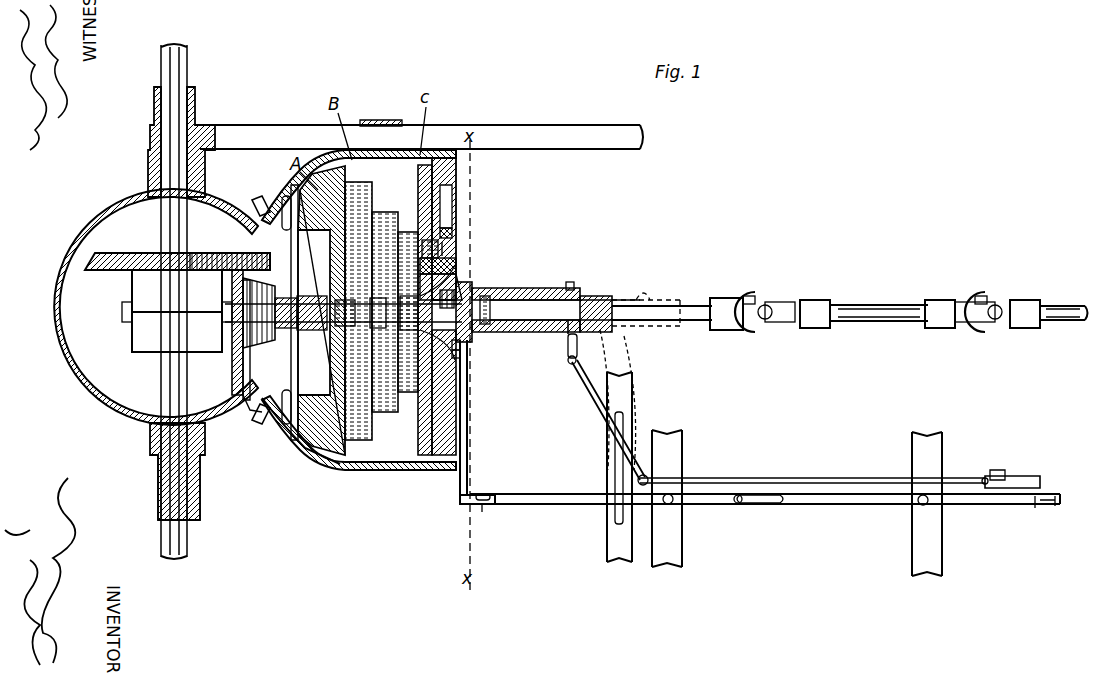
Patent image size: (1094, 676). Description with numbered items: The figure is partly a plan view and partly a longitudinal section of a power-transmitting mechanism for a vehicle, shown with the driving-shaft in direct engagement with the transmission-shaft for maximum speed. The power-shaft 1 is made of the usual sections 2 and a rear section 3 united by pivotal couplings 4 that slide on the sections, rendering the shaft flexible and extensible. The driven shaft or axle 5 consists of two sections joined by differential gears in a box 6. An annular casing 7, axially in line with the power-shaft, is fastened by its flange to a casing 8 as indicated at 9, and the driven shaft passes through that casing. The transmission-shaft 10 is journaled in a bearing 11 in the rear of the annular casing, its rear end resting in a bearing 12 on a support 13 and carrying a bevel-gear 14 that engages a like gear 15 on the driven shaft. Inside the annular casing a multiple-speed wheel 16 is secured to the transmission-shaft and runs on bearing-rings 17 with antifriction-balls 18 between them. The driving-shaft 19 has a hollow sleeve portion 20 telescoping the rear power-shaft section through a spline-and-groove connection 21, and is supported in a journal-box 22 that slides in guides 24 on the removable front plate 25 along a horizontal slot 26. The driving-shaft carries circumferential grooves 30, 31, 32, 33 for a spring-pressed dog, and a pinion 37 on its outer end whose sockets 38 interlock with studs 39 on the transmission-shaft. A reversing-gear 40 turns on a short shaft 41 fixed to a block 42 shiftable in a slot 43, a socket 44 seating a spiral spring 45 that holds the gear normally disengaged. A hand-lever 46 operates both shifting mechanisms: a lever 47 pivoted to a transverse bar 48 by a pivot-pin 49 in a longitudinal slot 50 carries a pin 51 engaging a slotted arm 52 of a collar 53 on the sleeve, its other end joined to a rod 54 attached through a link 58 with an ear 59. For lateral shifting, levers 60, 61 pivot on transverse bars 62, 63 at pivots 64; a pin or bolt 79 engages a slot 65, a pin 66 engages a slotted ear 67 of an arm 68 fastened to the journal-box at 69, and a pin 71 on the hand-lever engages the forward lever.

The power-shaft 1 is at (899, 300).
The power-shaft sections 2 is at (870, 326).
The rear end section of power-shaft 3 is at (690, 308).
The pivotal coupling 4 is at (768, 298).
The driven shaft or axle 5 is at (161, 222).
The differential gear box or casing 6 is at (177, 311).
The annular casing 7 is at (380, 470).
The casing 8 is at (100, 400).
The flange fastening 9 is at (270, 200).
The transmission-shaft 10 is at (258, 350).
The bearing 11 is at (254, 256).
The bearing 12 is at (222, 326).
The support 13 is at (238, 362).
The bevel-gear 14 is at (240, 385).
The bevel-gear 15 is at (220, 253).
The multiple-speed wheel 16 is at (318, 456).
The bearing-rings 17 is at (292, 425).
The antifriction-balls 18 is at (286, 236).
The driving-shaft 19 is at (492, 290).
The sleeve portion 20 is at (596, 296).
The spline-and-groove connection 21 is at (560, 290).
The journal-box 22 is at (520, 292).
The guides 24 is at (455, 296).
The front plate 25 is at (468, 450).
The horizontal slot 26 is at (470, 404).
The circumferential groove 30 is at (498, 342).
The circumferential groove 31 is at (470, 352).
The circumferential groove 32 is at (466, 364).
The circumferential groove 33 is at (412, 355).
The pinion 37 is at (300, 180).
The sockets 38 is at (352, 455).
The studs 39 is at (330, 460).
The reversing-gear 40 is at (456, 210).
The short shaft 41 is at (440, 250).
The block 42 is at (462, 276).
The slot 43 is at (480, 232).
The socket 44 is at (452, 208).
The spiral spring 45 is at (448, 190).
The hand-lever 46 is at (1005, 480).
The lever 47 is at (590, 394).
The transverse bar 48 is at (638, 392).
The pivot-pin 49 is at (604, 444).
The longitudinal slot 50 is at (636, 418).
The pin 51 is at (568, 360).
The slotted arm 52 is at (580, 348).
The collar or ring 53 is at (574, 286).
The rod 54 is at (770, 478).
The link 58 is at (995, 470).
The ear 59 is at (982, 478).
The lever 60 is at (850, 506).
The lever 61 is at (570, 506).
The transverse bar 62 is at (912, 536).
The transverse bar 63 is at (684, 540).
The pivots 64 is at (684, 504).
The longitudinal slot 65 is at (772, 504).
The pin 66 is at (482, 492).
The slotted ear 67 is at (482, 508).
The arm 68 is at (460, 486).
The fastening of arm 69 is at (445, 404).
The pin 71 is at (1034, 506).
The pin or bolt 79 is at (739, 505).